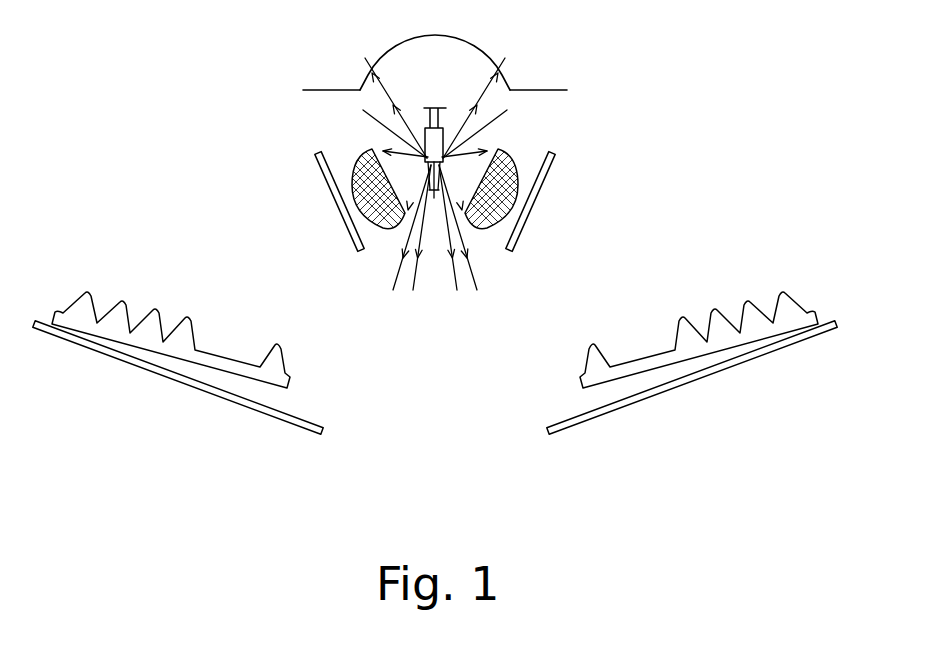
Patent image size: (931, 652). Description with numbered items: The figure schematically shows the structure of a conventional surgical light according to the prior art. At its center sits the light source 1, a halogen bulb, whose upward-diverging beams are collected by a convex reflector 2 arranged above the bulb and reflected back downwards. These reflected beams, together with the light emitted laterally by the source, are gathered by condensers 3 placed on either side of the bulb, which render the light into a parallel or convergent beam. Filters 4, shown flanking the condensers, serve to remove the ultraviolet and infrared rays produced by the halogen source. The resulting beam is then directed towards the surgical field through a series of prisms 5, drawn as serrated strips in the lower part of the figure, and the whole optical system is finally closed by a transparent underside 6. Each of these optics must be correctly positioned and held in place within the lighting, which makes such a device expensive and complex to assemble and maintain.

The light source 1 is at (483, 93).
The convex reflector 2 is at (380, 53).
The condensers 3 is at (362, 152).
The filters 4 is at (545, 193).
The prisms 5 is at (683, 353).
The transparent underside 6 is at (283, 420).